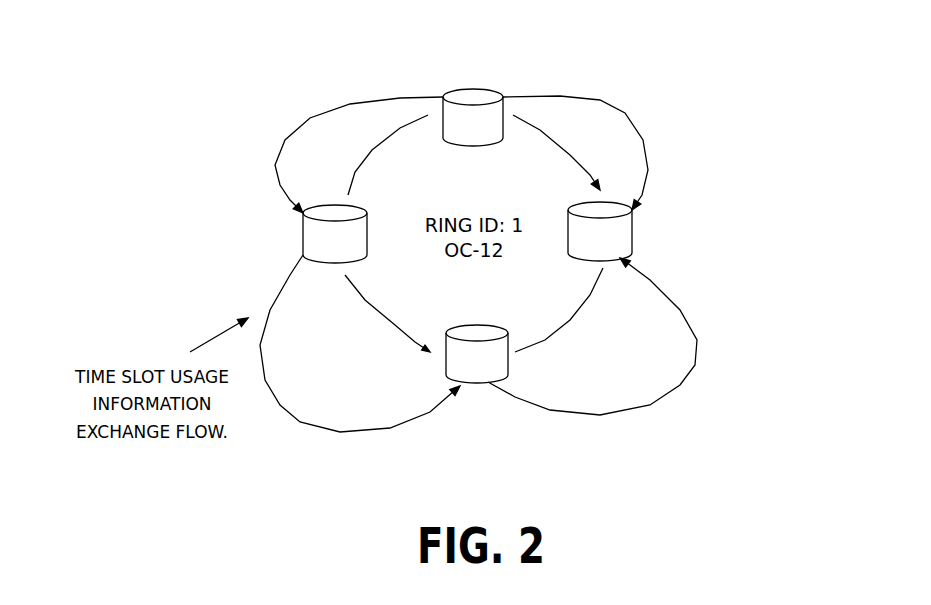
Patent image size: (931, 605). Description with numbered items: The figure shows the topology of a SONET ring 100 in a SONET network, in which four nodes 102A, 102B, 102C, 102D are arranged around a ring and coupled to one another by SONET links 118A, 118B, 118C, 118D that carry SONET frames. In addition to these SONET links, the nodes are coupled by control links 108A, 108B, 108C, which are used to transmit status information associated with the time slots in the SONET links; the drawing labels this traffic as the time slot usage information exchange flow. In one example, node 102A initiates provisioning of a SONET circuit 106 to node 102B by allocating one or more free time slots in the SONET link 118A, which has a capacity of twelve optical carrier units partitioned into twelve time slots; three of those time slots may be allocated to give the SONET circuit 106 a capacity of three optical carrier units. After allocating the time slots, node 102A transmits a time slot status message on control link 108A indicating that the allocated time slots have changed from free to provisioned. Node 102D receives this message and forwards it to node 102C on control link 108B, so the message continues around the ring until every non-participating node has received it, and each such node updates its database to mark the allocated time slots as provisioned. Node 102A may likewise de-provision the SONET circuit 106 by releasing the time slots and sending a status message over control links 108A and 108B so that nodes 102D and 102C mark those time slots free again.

The optical network ring system 100 is at (731, 31).
The node 102A is at (446, 88).
The node 102B is at (633, 243).
The node 102C is at (455, 323).
The node 102D is at (300, 228).
The SONET circuit 106 is at (622, 108).
The control link 108A is at (303, 113).
The control link 108B is at (320, 405).
The control link 108C is at (695, 365).
The SONET link 118A is at (548, 128).
The SONET link 118B is at (552, 330).
The SONET link 118C is at (380, 287).
The SONET link 118D is at (396, 140).